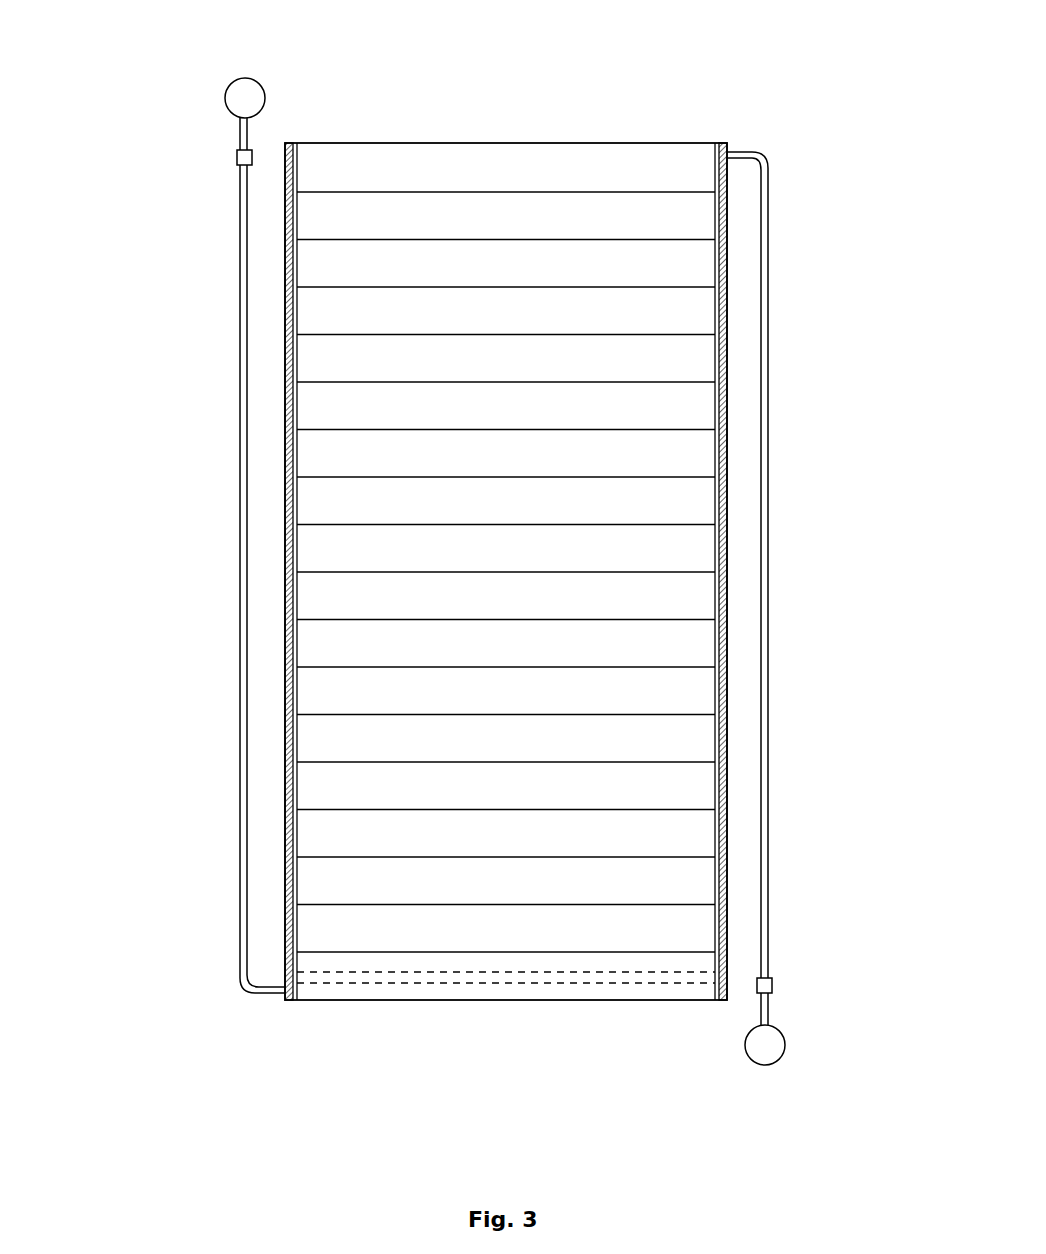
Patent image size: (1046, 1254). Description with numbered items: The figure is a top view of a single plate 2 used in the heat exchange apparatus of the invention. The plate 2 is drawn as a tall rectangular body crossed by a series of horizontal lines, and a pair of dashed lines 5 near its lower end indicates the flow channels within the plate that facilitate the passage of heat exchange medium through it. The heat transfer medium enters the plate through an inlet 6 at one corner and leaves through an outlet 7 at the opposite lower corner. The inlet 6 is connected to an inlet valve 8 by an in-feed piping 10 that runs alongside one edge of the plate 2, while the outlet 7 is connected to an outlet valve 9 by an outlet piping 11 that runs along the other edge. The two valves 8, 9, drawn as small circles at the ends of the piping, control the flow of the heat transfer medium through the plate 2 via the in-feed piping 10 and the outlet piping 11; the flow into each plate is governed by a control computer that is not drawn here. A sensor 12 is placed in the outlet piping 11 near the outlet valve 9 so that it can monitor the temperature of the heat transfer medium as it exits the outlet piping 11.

The plate 2 is at (485, 143).
The lower manifold channel 5 is at (468, 984).
The inlet 6 is at (727, 152).
The outlet 7 is at (284, 997).
The inlet valve 8 is at (786, 1043).
The outlet valve 9 is at (226, 101).
The in-feed piping 10 is at (769, 557).
The outlet piping 11 is at (241, 533).
The sensor 12 is at (236, 159).